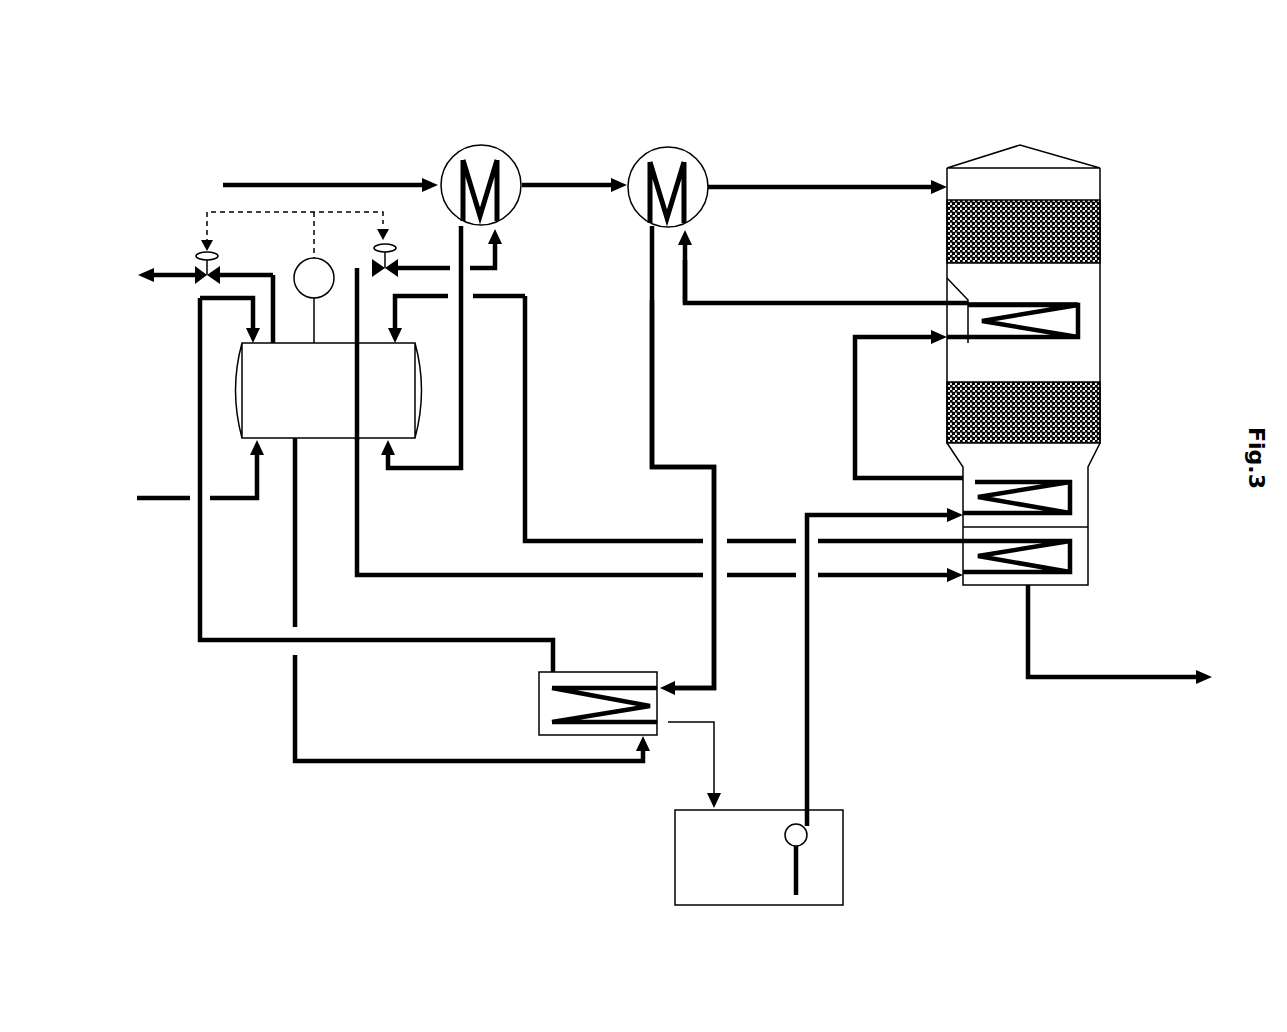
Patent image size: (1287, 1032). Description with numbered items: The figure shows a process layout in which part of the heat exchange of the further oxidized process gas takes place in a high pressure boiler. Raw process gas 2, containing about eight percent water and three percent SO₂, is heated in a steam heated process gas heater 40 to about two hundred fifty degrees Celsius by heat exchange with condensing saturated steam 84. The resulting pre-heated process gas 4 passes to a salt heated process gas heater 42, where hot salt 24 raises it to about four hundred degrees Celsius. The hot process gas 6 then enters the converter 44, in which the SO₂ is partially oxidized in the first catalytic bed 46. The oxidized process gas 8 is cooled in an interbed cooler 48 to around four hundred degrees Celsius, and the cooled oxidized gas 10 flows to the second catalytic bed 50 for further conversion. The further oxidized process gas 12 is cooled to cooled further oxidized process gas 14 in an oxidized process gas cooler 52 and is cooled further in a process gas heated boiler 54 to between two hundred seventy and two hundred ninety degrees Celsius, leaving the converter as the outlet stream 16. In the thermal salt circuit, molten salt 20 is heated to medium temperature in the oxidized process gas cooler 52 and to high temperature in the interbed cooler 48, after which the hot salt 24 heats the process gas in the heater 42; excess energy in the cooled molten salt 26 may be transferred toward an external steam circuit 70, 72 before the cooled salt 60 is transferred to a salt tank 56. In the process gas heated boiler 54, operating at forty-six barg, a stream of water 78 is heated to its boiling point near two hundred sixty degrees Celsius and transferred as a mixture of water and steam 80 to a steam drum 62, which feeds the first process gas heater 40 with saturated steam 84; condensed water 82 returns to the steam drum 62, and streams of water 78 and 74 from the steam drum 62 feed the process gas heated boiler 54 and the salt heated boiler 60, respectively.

The raw process gas 2 is at (322, 184).
The pre-heated process gas 4 is at (600, 182).
The hot process gas 6 is at (802, 184).
The oxidized process gas 8 is at (1035, 292).
The cooled oxidized gas 10 is at (1035, 362).
The further oxidized process gas 12 is at (1040, 462).
The cooled further oxidized process gas 14 is at (1040, 532).
The bottom product stream 16 is at (1142, 676).
The molten salt 20 is at (824, 514).
The hot salt 24 is at (831, 302).
The cooled molten salt 26 is at (652, 442).
The steam heated process gas heater 40 is at (480, 146).
The salt heated process gas heater 42 is at (670, 144).
The converter 44 is at (992, 154).
The first catalytic bed 46 is at (1100, 236).
The interbed cooler 48 is at (1076, 332).
The second catalytic bed 50 is at (1100, 400).
The oxidized process gas cooler 52 is at (1071, 498).
The process gas heated boiler 54 is at (1071, 572).
The salt tank 56 is at (787, 810).
The salt heated boiler 60 is at (621, 670).
The steam drum 62 is at (342, 442).
The external steam circuit 70 is at (166, 496).
The external steam circuit 72 is at (160, 270).
The stream of water 74 is at (464, 761).
The stream of water 78 is at (479, 574).
The mixture of water and steam 80 is at (622, 539).
The condensed water 82 is at (416, 470).
The saturated steam 84 is at (502, 266).